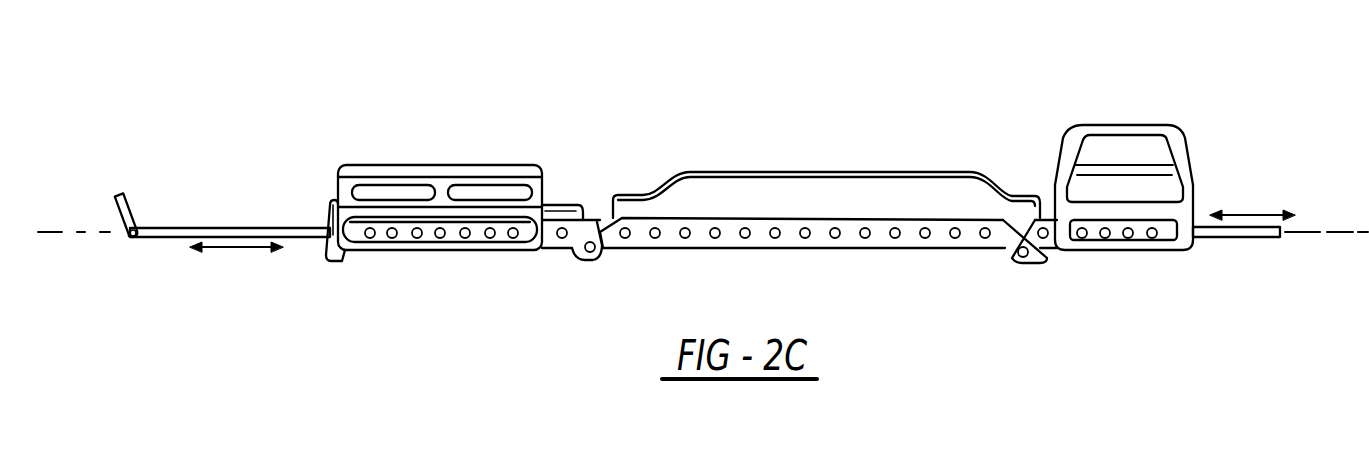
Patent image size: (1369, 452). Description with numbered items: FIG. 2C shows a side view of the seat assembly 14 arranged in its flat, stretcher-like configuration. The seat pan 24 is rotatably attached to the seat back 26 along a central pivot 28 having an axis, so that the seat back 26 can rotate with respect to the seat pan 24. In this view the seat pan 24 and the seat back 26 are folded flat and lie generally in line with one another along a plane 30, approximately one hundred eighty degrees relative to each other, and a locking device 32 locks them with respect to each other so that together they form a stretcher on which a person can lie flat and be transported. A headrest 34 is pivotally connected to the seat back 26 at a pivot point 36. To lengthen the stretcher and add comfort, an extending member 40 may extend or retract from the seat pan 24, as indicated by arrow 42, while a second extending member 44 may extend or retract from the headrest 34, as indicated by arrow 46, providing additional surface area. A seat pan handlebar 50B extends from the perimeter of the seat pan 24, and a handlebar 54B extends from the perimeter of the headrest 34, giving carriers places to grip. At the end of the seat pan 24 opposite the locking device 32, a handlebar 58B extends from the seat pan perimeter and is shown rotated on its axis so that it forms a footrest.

The seat assembly 14 is at (1227, 133).
The seat pan 24 is at (560, 205).
The seat back 26 is at (797, 176).
The central pivot 28 is at (590, 245).
The plane 30 is at (61, 230).
The locking device 32 is at (604, 257).
The headrest 34 is at (1044, 257).
The pivot point 36 is at (1023, 257).
The extending member 40 is at (303, 228).
The arrow 42 is at (243, 250).
The extending member 44 is at (1247, 238).
The arrow 46 is at (1262, 213).
The seat pan handlebar 50B is at (432, 165).
The handlebar 54B is at (1133, 125).
The handlebar 58B is at (119, 216).